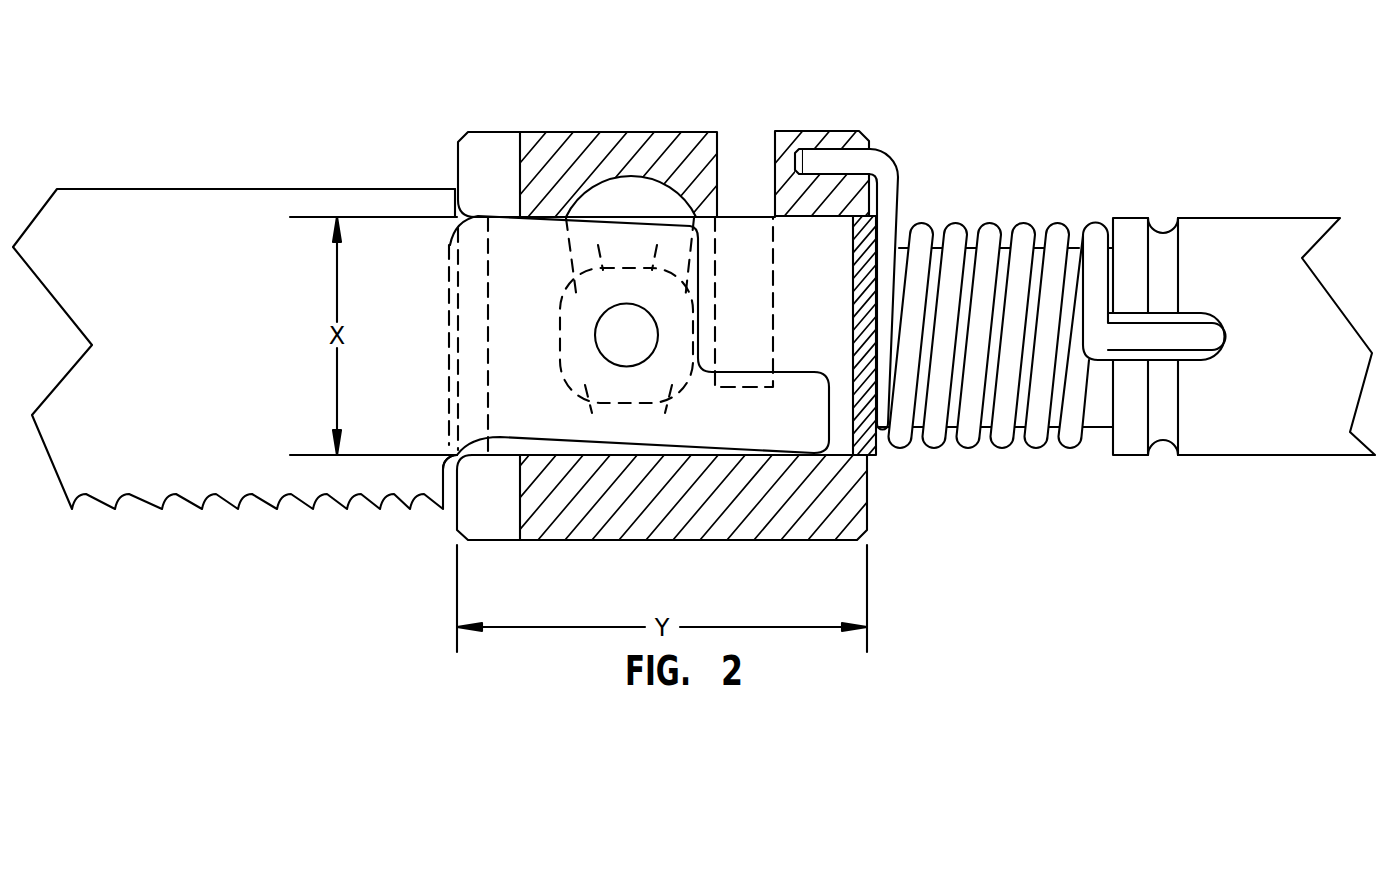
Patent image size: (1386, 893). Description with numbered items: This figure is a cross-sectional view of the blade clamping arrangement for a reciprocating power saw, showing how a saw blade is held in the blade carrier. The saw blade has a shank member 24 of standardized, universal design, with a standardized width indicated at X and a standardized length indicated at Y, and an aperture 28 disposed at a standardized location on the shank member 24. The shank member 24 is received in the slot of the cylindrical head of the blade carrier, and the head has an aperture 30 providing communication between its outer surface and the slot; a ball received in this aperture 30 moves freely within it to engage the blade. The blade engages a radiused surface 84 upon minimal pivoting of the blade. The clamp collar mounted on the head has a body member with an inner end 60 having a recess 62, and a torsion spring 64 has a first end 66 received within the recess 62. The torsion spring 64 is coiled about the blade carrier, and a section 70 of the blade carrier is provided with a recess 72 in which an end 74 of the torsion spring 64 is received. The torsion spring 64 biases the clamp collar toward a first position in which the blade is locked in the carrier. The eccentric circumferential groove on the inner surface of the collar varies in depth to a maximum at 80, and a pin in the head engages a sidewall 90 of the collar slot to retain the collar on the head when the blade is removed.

The shank member 24 is at (540, 417).
The aperture 28 is at (626, 303).
The aperture 30 is at (592, 220).
The inner end 60 is at (868, 495).
The recess 62 is at (867, 158).
The torsion spring 64 is at (1025, 222).
The first end 66 is at (882, 154).
The section 70 is at (1282, 457).
The recess 72 is at (1227, 342).
The end 74 is at (1137, 337).
The maximum depth 80 is at (717, 153).
The radiused surface 84 is at (457, 453).
The sidewall 90 is at (762, 157).